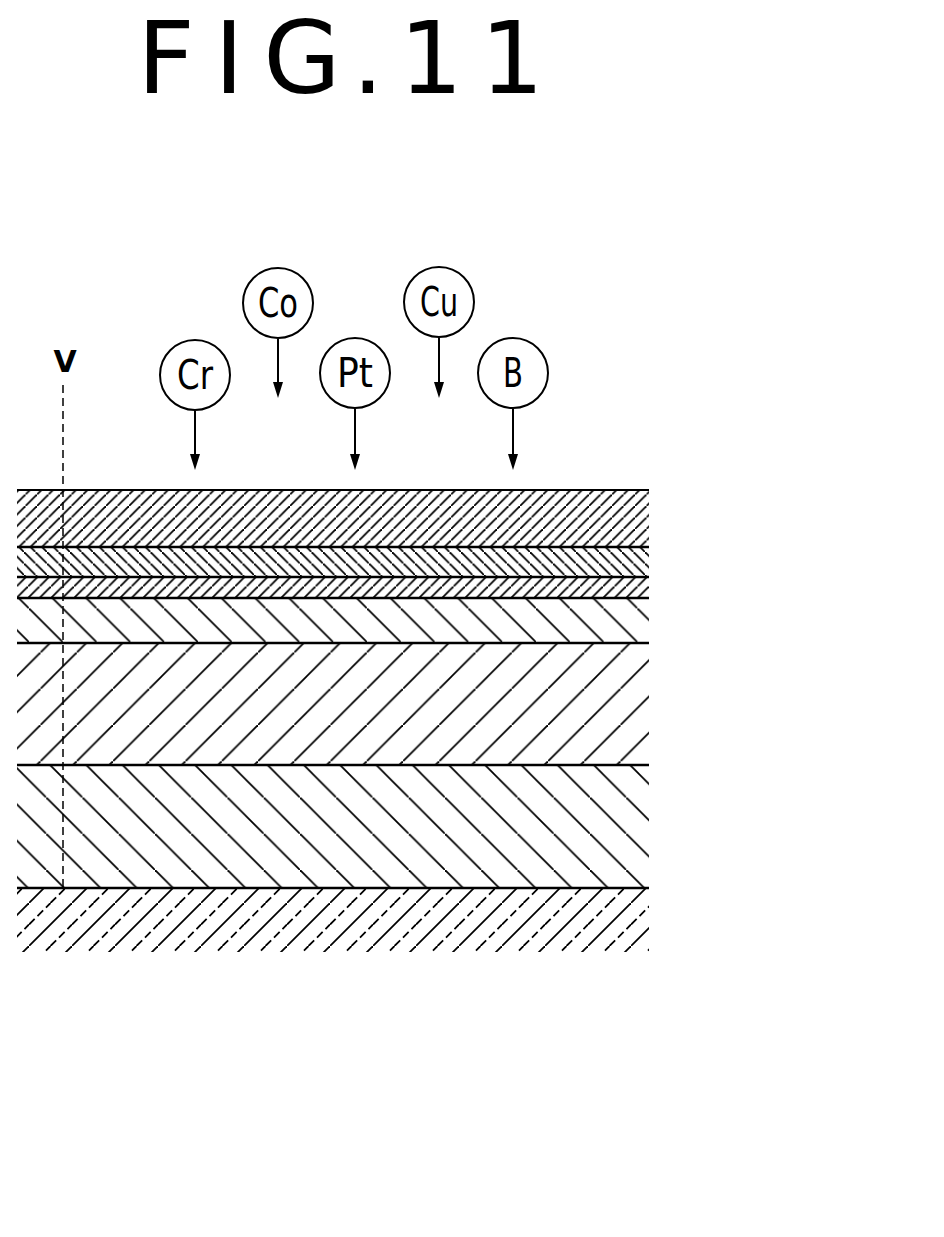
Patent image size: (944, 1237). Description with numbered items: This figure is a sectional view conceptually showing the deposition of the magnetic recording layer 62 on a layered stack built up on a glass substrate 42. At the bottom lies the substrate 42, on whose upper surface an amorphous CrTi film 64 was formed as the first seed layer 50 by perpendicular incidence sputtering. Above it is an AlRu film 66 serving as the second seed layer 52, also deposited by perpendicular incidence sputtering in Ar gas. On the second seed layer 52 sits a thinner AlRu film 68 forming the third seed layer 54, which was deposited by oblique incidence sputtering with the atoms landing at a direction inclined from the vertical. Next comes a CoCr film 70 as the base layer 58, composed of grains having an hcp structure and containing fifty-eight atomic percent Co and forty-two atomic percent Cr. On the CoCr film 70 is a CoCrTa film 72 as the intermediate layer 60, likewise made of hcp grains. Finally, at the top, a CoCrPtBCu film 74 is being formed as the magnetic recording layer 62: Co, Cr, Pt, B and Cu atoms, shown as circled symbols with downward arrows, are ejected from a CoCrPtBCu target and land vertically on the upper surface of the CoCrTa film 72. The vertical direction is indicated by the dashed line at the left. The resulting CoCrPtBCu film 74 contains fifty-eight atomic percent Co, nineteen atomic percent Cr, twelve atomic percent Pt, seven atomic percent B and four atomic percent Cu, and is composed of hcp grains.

The glass substrate 42 is at (336, 932).
The CrTi film 64 is at (419, 826).
The first seed layer 50 is at (627, 831).
The AlRu film 66 is at (419, 704).
The second seed layer 52 is at (627, 703).
The AlRu film 68 is at (418, 625).
The third seed layer 54 is at (633, 627).
The CoCr film 70 is at (418, 584).
The base layer 58 is at (643, 582).
The CoCrTa film 72 is at (418, 538).
The intermediate layer 60 is at (650, 562).
The CoCrPtBCu film 74 is at (396, 471).
The magnetic recording layer 62 is at (628, 490).